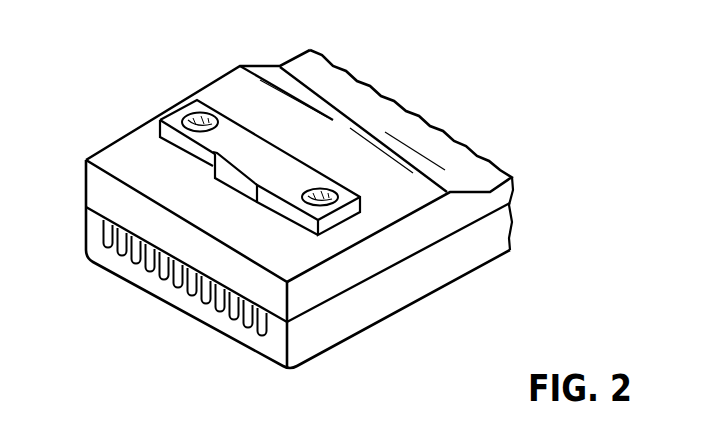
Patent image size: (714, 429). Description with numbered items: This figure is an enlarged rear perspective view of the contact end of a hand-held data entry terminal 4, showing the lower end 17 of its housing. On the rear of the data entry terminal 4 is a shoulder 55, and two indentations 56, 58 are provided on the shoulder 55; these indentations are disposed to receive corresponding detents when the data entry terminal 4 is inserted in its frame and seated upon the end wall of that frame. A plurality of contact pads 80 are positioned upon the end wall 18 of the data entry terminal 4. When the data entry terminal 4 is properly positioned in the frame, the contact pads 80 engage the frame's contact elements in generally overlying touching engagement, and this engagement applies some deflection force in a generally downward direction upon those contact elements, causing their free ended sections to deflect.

The data entry terminal 4 is at (481, 285).
The lower end 17 is at (377, 312).
The end wall 18 is at (272, 350).
The shoulder 55 is at (285, 162).
The indentation 56 is at (337, 192).
The indentation 58 is at (208, 118).
The contact pads 80 is at (134, 262).